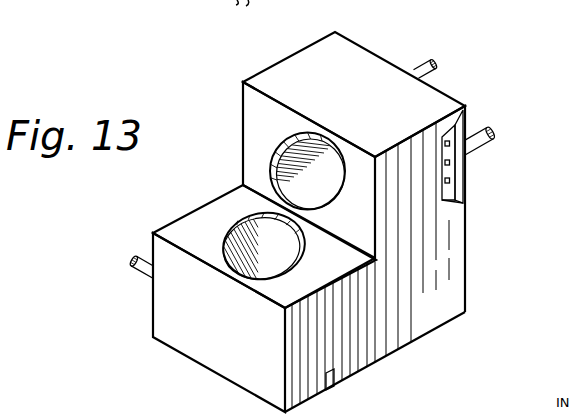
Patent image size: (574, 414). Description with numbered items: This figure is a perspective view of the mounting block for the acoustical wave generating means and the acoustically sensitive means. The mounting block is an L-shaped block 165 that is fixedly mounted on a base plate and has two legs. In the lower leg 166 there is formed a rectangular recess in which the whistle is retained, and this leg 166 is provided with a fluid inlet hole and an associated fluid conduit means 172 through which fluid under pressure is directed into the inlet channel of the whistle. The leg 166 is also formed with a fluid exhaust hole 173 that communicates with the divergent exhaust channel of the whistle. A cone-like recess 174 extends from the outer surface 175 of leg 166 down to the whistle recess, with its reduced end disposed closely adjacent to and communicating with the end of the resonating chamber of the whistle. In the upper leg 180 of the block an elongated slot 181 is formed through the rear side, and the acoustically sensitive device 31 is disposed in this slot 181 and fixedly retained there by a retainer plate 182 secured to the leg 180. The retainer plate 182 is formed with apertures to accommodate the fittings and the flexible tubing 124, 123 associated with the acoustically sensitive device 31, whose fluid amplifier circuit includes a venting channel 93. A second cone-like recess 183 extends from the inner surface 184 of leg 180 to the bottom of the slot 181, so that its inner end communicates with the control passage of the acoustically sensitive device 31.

The leg of block 180 is at (335, 55).
The elongated slot 181 is at (443, 148).
The retainer plate 182 is at (459, 128).
The cone-like recess 183 is at (273, 150).
The inner surface 184 is at (368, 226).
The outer surface 175 is at (208, 244).
The cone-like recess 174 is at (292, 262).
The fluid conduit means 172 is at (140, 274).
The flexible tubing 123 is at (418, 62).
The flexible tubing 124 is at (492, 133).
The venting channel 93 is at (449, 163).
The acoustically sensitive device 31 is at (446, 200).
The L-shaped block 165 is at (422, 318).
The leg of block 166 is at (217, 374).
The fluid exhaust hole 173 is at (331, 391).